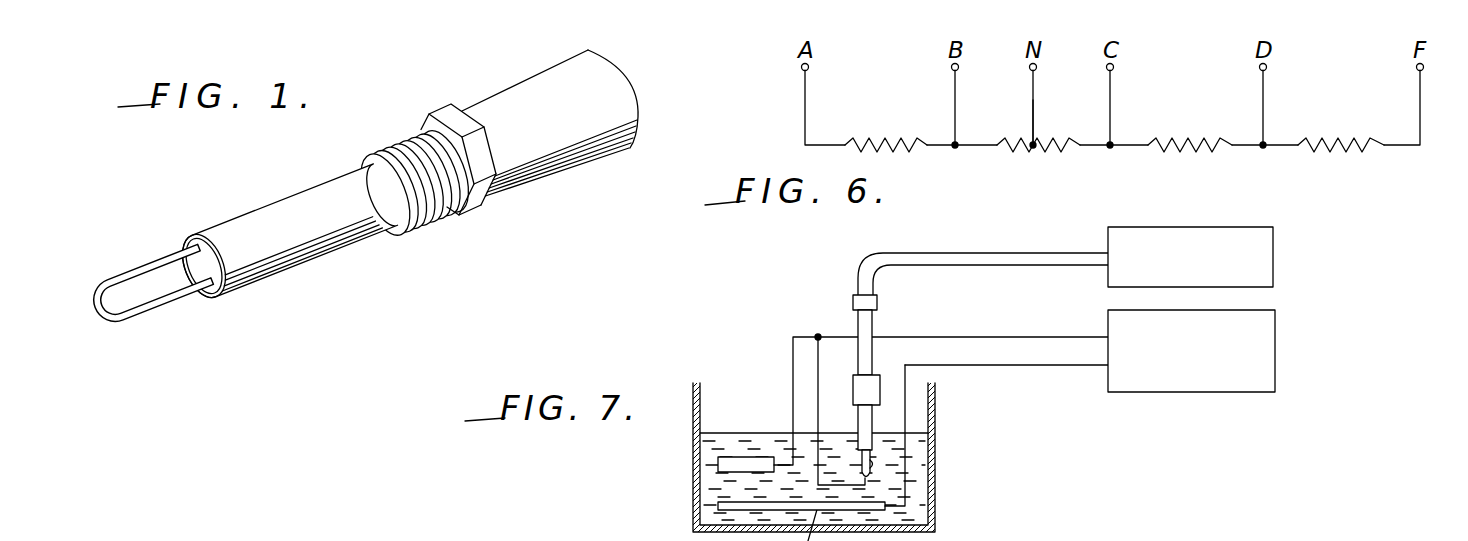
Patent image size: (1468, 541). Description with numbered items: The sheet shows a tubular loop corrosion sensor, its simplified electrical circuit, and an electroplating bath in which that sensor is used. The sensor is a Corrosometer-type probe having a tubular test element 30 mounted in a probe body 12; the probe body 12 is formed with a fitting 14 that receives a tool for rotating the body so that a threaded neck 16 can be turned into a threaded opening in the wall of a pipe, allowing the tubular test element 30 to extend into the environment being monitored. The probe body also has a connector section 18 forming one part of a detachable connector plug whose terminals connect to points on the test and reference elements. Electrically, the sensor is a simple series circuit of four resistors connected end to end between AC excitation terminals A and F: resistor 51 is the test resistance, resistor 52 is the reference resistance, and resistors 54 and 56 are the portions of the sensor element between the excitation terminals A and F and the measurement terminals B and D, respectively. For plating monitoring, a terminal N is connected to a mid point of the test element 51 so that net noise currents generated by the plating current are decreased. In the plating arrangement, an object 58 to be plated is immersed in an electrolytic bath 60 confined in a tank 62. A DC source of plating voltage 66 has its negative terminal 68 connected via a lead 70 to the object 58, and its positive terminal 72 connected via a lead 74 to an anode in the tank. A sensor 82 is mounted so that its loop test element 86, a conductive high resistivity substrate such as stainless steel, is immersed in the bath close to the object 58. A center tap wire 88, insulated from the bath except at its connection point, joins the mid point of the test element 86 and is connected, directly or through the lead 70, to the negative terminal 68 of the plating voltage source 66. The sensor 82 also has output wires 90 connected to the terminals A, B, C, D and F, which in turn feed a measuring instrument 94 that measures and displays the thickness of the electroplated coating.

In FIG. 1, the probe body 12 is at (268, 205).
In FIG. 1, the fitting 14 is at (442, 110).
In FIG. 1, the threaded neck 16 is at (380, 148).
In FIG. 1, the connector section 18 is at (548, 176).
In FIG. 1, the tubular test element 30 is at (137, 250).
In FIG. 6, the test resistance 51 is at (1015, 140).
In FIG. 6, the reference resistance 52 is at (1198, 142).
In FIG. 6, the sensor element portion 54 is at (878, 140).
In FIG. 6, the sensor element portion 56 is at (1353, 141).
In FIG. 6, the center tap wire 88 is at (1034, 105).
In FIG. 7, the center tap wire 88 is at (817, 467).
In FIG. 7, the object to be plated 58 is at (740, 458).
In FIG. 7, the electrolytic bath 60 is at (811, 437).
In FIG. 7, the tank 62 is at (935, 480).
In FIG. 7, the DC source of plating voltage 66 is at (1277, 325).
In FIG. 7, the negative terminal 68 is at (1110, 332).
In FIG. 7, the lead 70 is at (985, 336).
In FIG. 7, the positive terminal 72 is at (1110, 372).
In FIG. 7, the lead 74 is at (1018, 370).
In FIG. 7, the sensor 82 is at (853, 420).
In FIG. 7, the loop test element 86 is at (868, 474).
In FIG. 7, the output wires 90 is at (857, 327).
In FIG. 7, the measuring instrument 94 is at (1275, 241).